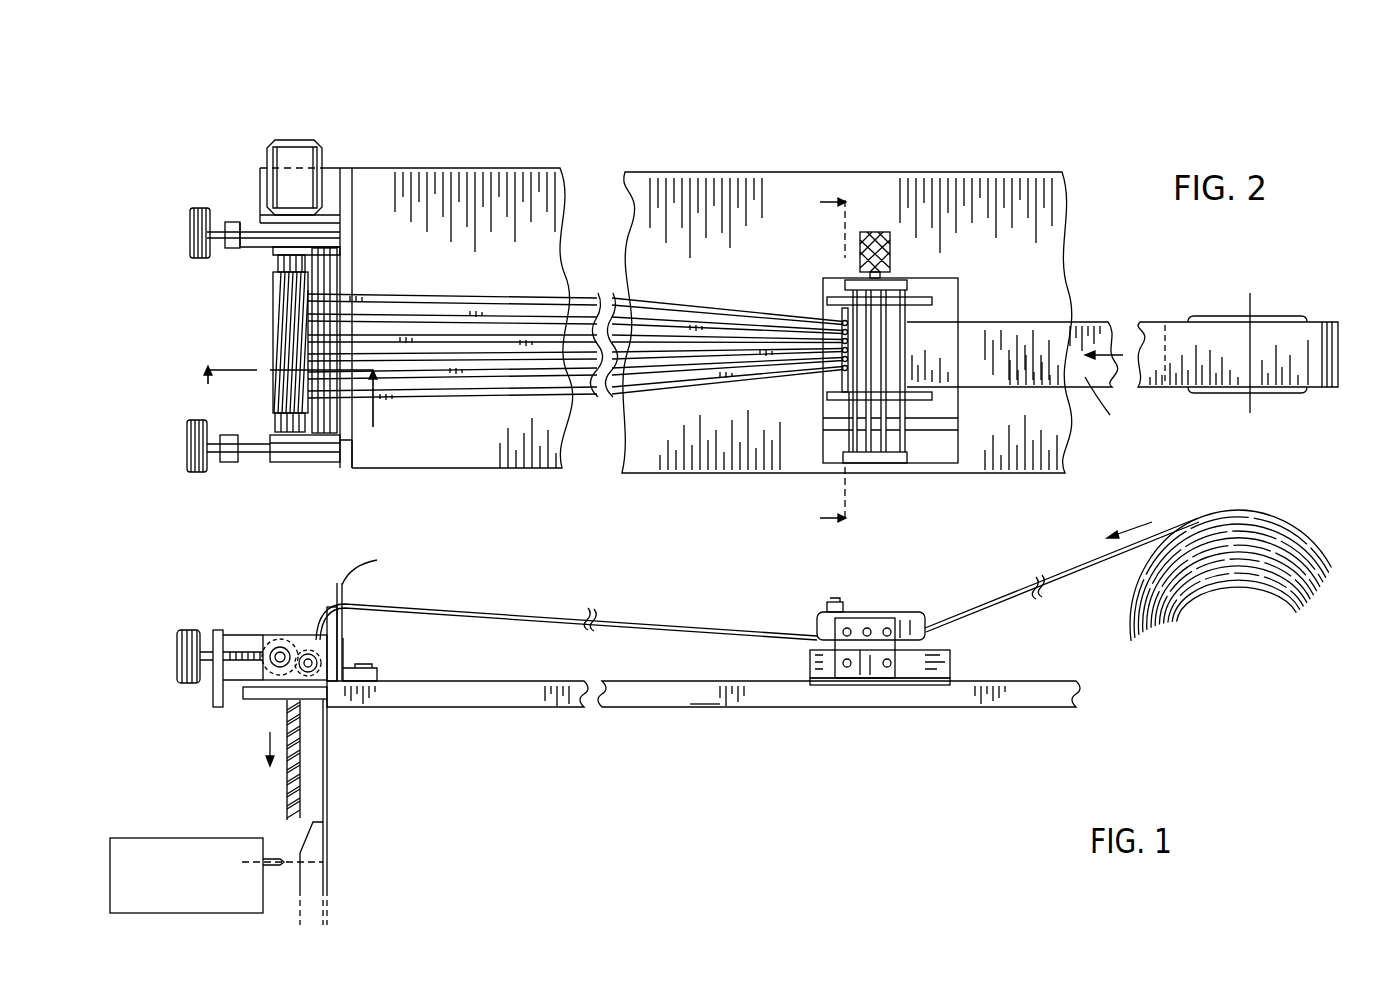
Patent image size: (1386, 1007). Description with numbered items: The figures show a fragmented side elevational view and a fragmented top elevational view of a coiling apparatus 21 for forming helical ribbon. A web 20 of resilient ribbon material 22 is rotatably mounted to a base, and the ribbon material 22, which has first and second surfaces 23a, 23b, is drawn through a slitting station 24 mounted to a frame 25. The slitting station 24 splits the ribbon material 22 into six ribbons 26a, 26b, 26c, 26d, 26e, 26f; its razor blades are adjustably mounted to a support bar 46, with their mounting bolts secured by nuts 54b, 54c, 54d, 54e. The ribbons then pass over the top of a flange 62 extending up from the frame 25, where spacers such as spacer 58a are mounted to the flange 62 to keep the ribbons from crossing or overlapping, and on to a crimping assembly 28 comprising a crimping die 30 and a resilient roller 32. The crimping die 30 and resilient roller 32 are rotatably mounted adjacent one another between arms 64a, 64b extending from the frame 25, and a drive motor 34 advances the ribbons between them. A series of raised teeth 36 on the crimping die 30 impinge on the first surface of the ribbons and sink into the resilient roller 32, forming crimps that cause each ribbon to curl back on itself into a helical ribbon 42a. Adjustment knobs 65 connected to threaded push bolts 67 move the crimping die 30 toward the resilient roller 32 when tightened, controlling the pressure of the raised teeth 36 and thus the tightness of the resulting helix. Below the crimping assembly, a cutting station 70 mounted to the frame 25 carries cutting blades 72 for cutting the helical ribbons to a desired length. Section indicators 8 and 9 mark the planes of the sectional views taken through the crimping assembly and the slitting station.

In FIG. 2, the section line 8 is at (281, 412).
In FIG. 2, the section line 9 is at (823, 361).
In FIG. 2, the web 20 is at (1278, 357).
In FIG. 1, the web 20 is at (1238, 523).
In FIG. 2, the coiling apparatus 21 is at (1000, 217).
In FIG. 1, the coiling apparatus 21 is at (950, 707).
In FIG. 2, the resilient ribbon material 22 is at (1025, 320).
In FIG. 1, the resilient ribbon material 22 is at (1080, 560).
In FIG. 1, the first surface 23a is at (975, 608).
In FIG. 2, the second surface 23b is at (1116, 411).
In FIG. 1, the second surface 23b is at (945, 615).
In FIG. 2, the slitting station 24 is at (838, 302).
In FIG. 1, the slitting station 24 is at (870, 620).
In FIG. 1, the frame 25 is at (695, 705).
In FIG. 2, the ribbon 26a is at (414, 395).
In FIG. 1, the ribbon 26a is at (648, 617).
In FIG. 2, the ribbon 26b is at (457, 372).
In FIG. 2, the ribbon 26c is at (484, 352).
In FIG. 2, the ribbon 26d is at (507, 335).
In FIG. 2, the ribbon 26e is at (402, 313).
In FIG. 2, the ribbon 26f is at (385, 292).
In FIG. 2, the crimping assembly 28 is at (315, 236).
In FIG. 1, the crimping assembly 28 is at (275, 646).
In FIG. 2, the crimping die 30 is at (288, 435).
In FIG. 1, the crimping die 30 is at (287, 648).
In FIG. 2, the resilient roller 32 is at (316, 420).
In FIG. 1, the resilient roller 32 is at (305, 658).
In FIG. 2, the drive motor 34 is at (287, 178).
In FIG. 1, the drive motor 34 is at (255, 700).
In FIG. 2, the raised teeth 36 is at (285, 295).
In FIG. 1, the helical ribbon 42a is at (288, 786).
In FIG. 2, the support bar 46 is at (853, 393).
In FIG. 2, the nut 54b is at (843, 359).
In FIG. 2, the nut 54c is at (843, 350).
In FIG. 2, the nut 54d is at (843, 332).
In FIG. 2, the nut 54e is at (843, 341).
In FIG. 1, the spacer 58a is at (375, 608).
In FIG. 1, the flange 62 is at (332, 635).
In FIG. 2, the arm 64a is at (350, 470).
In FIG. 2, the arm 64b is at (347, 167).
In FIG. 2, the adjustment knob 65 is at (197, 232).
In FIG. 1, the adjustment knob 65 is at (180, 657).
In FIG. 1, the threaded push bolt 67 is at (222, 646).
In FIG. 1, the cutting station 70 is at (153, 838).
In FIG. 1, the cutting blade 72 is at (281, 857).